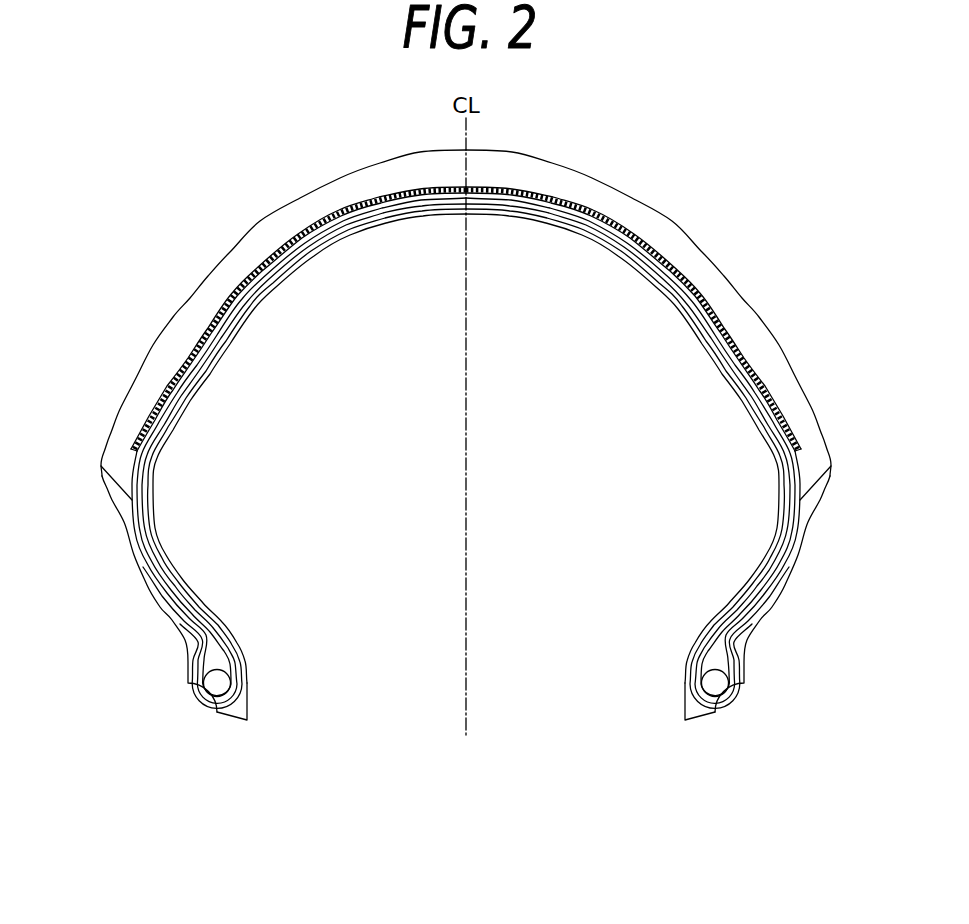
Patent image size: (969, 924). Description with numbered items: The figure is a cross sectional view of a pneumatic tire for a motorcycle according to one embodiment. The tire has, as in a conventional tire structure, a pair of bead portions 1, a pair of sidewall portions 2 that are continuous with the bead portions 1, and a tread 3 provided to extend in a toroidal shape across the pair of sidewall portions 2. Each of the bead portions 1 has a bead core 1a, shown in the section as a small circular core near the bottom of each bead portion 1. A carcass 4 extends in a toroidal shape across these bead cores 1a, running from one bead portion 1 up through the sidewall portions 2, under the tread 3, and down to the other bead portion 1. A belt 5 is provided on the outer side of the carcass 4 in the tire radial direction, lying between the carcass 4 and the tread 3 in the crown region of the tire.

The bead portion 1 is at (183, 650).
The bead core 1a is at (218, 688).
The sidewall portion 2 is at (136, 549).
The tread 3 is at (638, 197).
The carcass 4 is at (763, 388).
The belt 5 is at (733, 335).